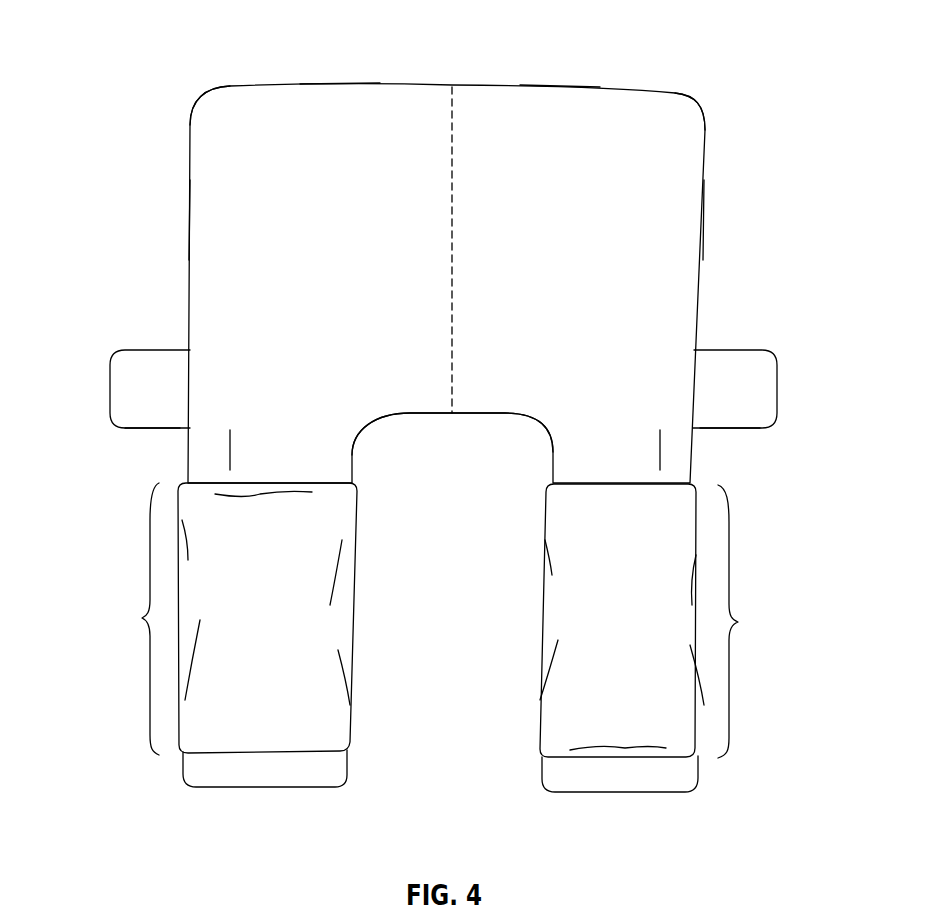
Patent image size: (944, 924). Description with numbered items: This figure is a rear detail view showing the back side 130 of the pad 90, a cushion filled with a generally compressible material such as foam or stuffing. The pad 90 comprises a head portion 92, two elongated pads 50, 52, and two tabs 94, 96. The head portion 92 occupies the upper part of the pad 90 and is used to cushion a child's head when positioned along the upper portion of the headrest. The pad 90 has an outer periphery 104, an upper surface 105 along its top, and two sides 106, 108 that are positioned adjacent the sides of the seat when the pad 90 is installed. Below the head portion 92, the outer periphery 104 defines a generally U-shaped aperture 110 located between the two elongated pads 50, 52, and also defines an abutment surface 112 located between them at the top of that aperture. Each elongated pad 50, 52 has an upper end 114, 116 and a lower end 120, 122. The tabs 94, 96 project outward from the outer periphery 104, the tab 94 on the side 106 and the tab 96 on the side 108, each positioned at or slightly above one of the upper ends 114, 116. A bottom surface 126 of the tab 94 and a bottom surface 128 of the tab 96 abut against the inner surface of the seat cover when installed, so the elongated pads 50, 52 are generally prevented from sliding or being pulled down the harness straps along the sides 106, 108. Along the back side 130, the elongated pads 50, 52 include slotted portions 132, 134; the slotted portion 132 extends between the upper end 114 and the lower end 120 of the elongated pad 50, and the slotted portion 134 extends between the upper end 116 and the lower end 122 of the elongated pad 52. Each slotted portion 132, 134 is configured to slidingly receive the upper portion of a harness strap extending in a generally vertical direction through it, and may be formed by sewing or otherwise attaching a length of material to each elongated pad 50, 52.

The pad 90 is at (737, 58).
The head portion 92 is at (190, 125).
The outer periphery 104 is at (333, 81).
The upper surface 105 is at (555, 85).
The back side 130 is at (688, 155).
The side 108 is at (190, 222).
The side 106 is at (705, 225).
The tab 96 is at (118, 378).
The tab 94 is at (765, 378).
The upper end 116 is at (277, 428).
The upper end 114 is at (607, 428).
The U-shaped aperture 110 is at (502, 481).
The abutment surface 112 is at (449, 414).
The bottom surface 128 is at (157, 431).
The bottom surface 126 is at (727, 432).
The elongated pad 52 is at (338, 635).
The elongated pad 50 is at (552, 623).
The lower end 122 is at (334, 772).
The lower end 120 is at (548, 775).
The slotted portion 134 is at (129, 619).
The slotted portion 132 is at (752, 621).